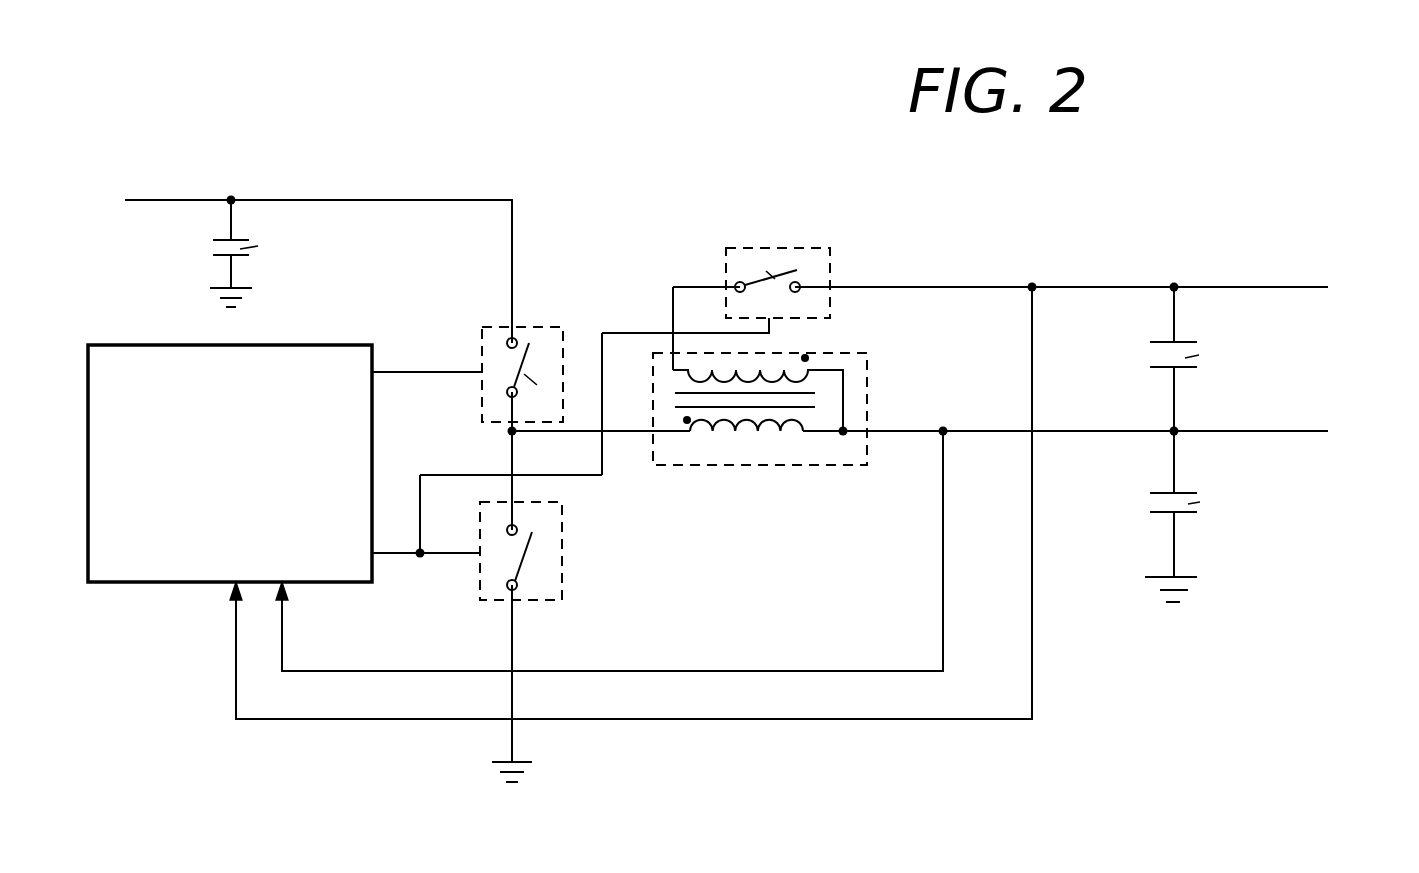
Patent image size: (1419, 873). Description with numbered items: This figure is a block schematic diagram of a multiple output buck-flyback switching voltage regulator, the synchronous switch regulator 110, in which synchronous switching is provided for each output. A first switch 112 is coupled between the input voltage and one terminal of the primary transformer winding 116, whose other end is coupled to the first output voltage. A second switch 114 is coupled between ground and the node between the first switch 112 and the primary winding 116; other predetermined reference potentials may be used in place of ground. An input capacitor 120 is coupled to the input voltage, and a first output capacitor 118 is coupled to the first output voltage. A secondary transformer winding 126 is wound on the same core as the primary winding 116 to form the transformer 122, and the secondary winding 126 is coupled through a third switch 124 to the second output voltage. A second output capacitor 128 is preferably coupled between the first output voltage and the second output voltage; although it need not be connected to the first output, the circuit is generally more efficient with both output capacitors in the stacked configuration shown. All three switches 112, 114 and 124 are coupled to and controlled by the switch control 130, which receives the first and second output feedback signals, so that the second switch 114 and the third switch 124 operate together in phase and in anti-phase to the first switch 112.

The synchronous switch regulator 110 is at (1158, 702).
The first switch 112 is at (522, 332).
The second switch 114 is at (560, 550).
The primary transformer winding 116 is at (793, 438).
The first output capacitor 118 is at (1156, 500).
The input capacitor 120 is at (214, 249).
The transformer 122 is at (770, 406).
The third switch 124 is at (766, 248).
The secondary transformer winding 126 is at (812, 371).
The second output capacitor 128 is at (1156, 358).
The switch control 130 is at (361, 346).